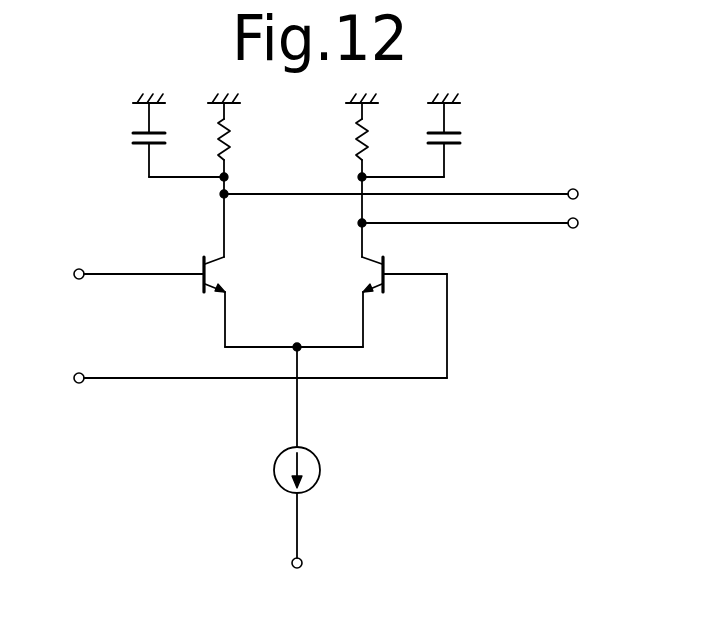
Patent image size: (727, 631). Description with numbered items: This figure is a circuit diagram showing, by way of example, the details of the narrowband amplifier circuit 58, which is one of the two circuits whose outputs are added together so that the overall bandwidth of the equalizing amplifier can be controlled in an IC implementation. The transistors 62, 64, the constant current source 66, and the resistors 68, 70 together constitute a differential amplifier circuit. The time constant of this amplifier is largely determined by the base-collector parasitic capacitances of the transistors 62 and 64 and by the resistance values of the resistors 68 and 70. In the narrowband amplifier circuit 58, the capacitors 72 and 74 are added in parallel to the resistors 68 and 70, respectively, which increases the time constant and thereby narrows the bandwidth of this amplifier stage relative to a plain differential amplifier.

The narrowband amplifier circuit 58 is at (507, 497).
The transistor 62 is at (200, 261).
The transistor 64 is at (388, 260).
The constant current source 66 is at (321, 465).
The resistor 68 is at (230, 140).
The resistor 70 is at (356, 140).
The capacitor 72 is at (133, 144).
The capacitor 74 is at (458, 144).